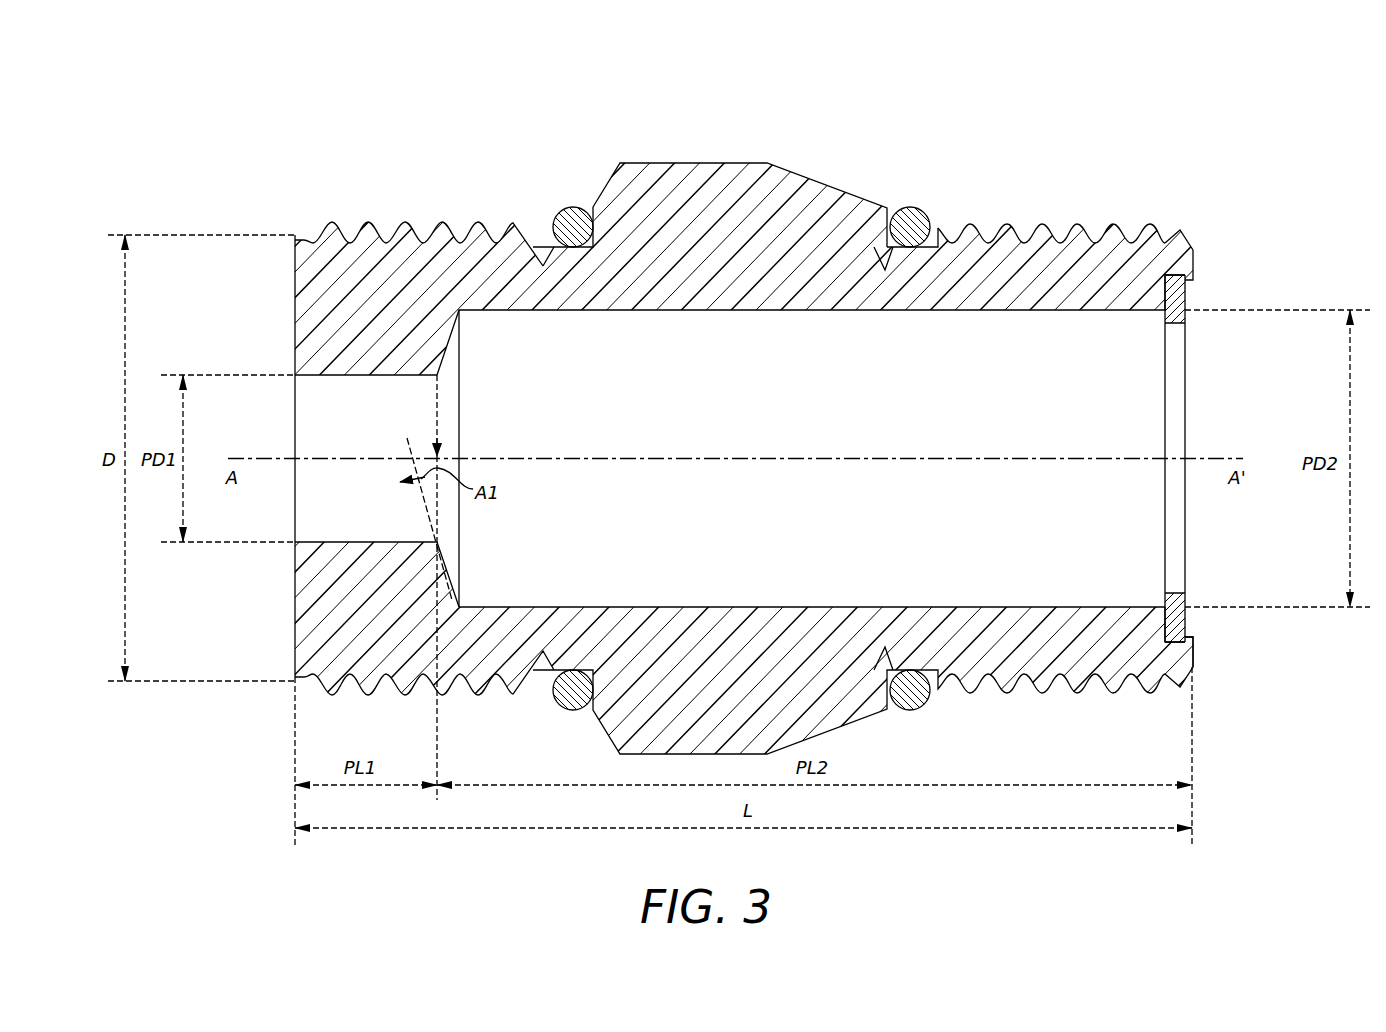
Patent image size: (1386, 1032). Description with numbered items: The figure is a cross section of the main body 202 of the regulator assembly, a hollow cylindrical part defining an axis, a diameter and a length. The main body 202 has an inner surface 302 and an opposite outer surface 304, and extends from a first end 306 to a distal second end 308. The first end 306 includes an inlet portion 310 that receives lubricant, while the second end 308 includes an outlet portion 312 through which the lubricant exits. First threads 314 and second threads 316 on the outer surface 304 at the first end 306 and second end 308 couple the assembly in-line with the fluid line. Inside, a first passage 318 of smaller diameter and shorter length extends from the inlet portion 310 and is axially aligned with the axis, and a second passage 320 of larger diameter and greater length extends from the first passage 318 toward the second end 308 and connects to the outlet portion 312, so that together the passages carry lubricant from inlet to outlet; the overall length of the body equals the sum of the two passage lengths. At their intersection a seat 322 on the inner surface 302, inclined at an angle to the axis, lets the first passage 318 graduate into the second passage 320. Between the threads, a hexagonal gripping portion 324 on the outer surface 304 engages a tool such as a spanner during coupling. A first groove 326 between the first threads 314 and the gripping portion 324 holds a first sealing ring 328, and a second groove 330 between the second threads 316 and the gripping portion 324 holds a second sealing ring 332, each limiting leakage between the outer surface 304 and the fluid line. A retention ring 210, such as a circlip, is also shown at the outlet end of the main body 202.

The main body 202 is at (947, 114).
The retention ring 210 is at (1186, 590).
The inner surface 302 is at (1070, 312).
The outer surface 304 is at (946, 222).
The first end 306 is at (266, 253).
The second end 308 is at (1226, 219).
The inlet portion 310 is at (268, 405).
The outlet portion 312 is at (1214, 530).
The first threads 314 is at (405, 221).
The second threads 316 is at (1113, 225).
The first passage 318 is at (314, 515).
The second passage 320 is at (571, 575).
The seat 322 is at (445, 573).
The gripping portion 324 is at (745, 162).
The first groove 326 is at (541, 262).
The first sealing ring 328 is at (568, 206).
The second groove 330 is at (884, 268).
The second sealing ring 332 is at (908, 206).